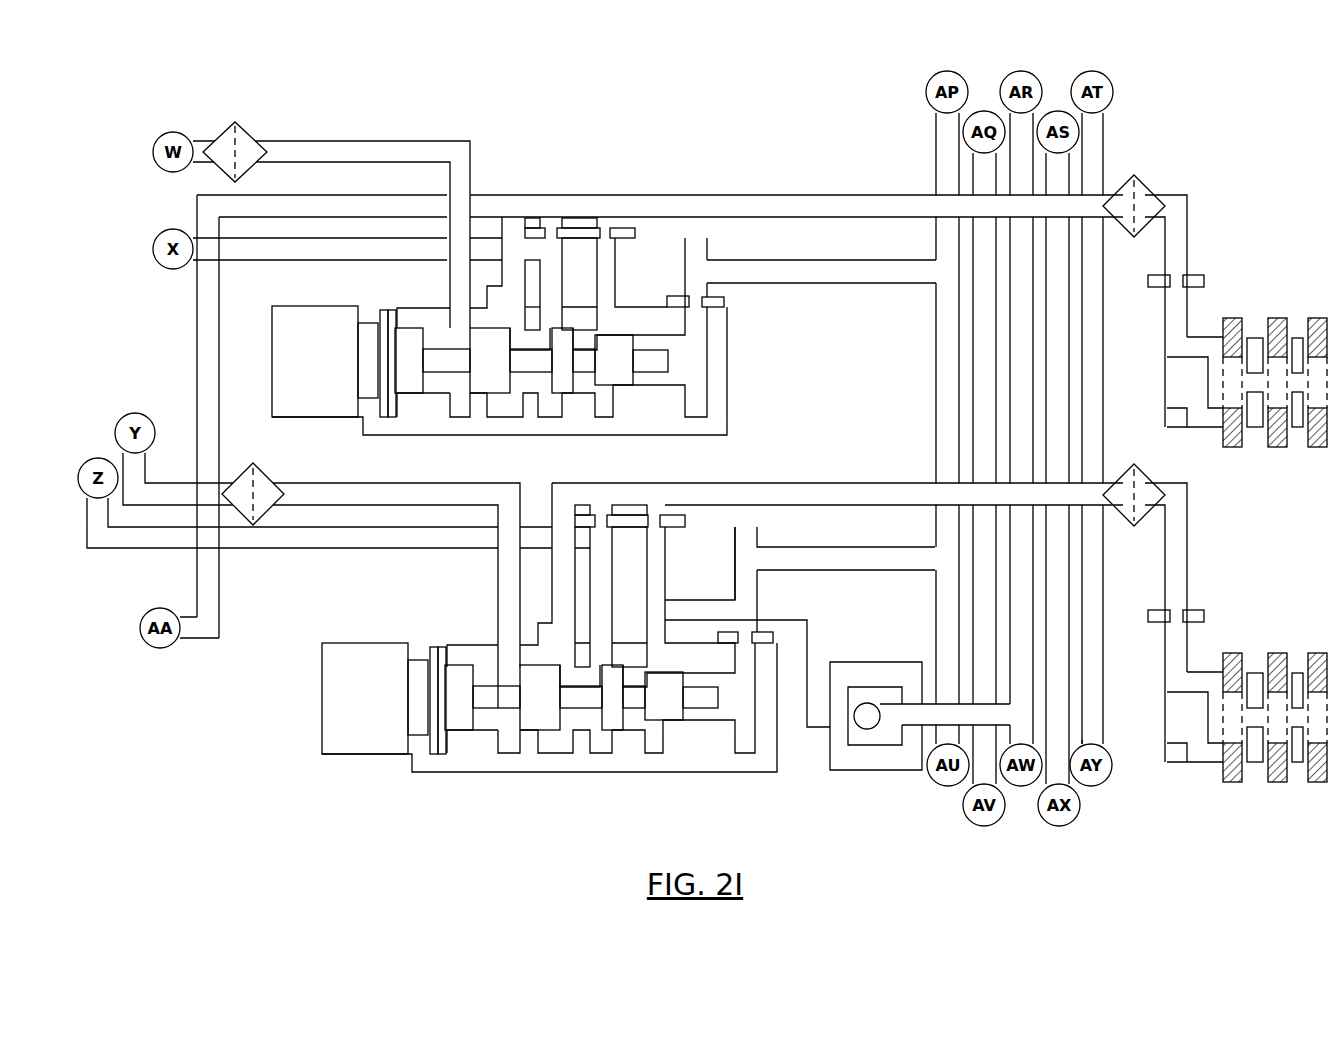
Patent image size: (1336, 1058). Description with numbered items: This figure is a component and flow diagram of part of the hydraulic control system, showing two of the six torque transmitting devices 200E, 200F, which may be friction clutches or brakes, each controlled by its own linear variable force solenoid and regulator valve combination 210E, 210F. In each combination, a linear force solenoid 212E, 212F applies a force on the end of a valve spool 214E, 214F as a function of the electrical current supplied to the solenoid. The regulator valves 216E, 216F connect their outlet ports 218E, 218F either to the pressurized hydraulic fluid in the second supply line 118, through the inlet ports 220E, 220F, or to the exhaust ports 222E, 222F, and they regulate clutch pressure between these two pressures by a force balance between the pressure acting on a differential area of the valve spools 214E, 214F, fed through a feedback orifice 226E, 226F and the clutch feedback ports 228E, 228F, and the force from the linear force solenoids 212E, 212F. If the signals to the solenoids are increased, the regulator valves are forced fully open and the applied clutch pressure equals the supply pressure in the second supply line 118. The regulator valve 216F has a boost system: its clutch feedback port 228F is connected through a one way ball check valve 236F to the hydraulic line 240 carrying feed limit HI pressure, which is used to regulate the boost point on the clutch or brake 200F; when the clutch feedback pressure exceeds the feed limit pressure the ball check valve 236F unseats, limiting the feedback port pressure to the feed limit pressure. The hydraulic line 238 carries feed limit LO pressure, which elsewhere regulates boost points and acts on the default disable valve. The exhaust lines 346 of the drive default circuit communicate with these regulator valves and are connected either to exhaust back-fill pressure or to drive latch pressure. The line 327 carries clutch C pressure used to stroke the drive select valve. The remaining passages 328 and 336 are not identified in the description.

The second supply line 118 is at (363, 150).
The fluid line 328 is at (810, 205).
The exhaust lines 346 is at (240, 252).
The line 327 is at (978, 392).
The hydraulic line 238 is at (1060, 422).
The hydraulic line 240 is at (1022, 610).
The fluid line 336 is at (1093, 658).
The torque transmitting device 200E is at (1273, 297).
The torque transmitting device 200F is at (1275, 632).
The linear variable force solenoid and regulator valve combination 210E is at (750, 427).
The linear variable force solenoid and regulator valve combination 210F is at (566, 799).
The linear force solenoid 212E is at (334, 361).
The linear force solenoid 212F is at (384, 698).
The valve spool 214E is at (655, 362).
The valve spool 214F is at (701, 703).
The regulator valve 216E is at (757, 358).
The regulator valve 216F is at (796, 657).
The outlet port 218E is at (515, 275).
The outlet port 218F is at (565, 495).
The inlet port 220E is at (458, 318).
The inlet port 220F is at (507, 640).
The exhaust port 222E is at (553, 324).
The exhaust port 222F is at (600, 660).
The feedback orifice 226E is at (640, 230).
The feedback orifice 226F is at (630, 517).
The clutch feedback port 228E is at (610, 327).
The clutch feedback port 228F is at (656, 625).
The one way ball check valve 236F is at (888, 732).